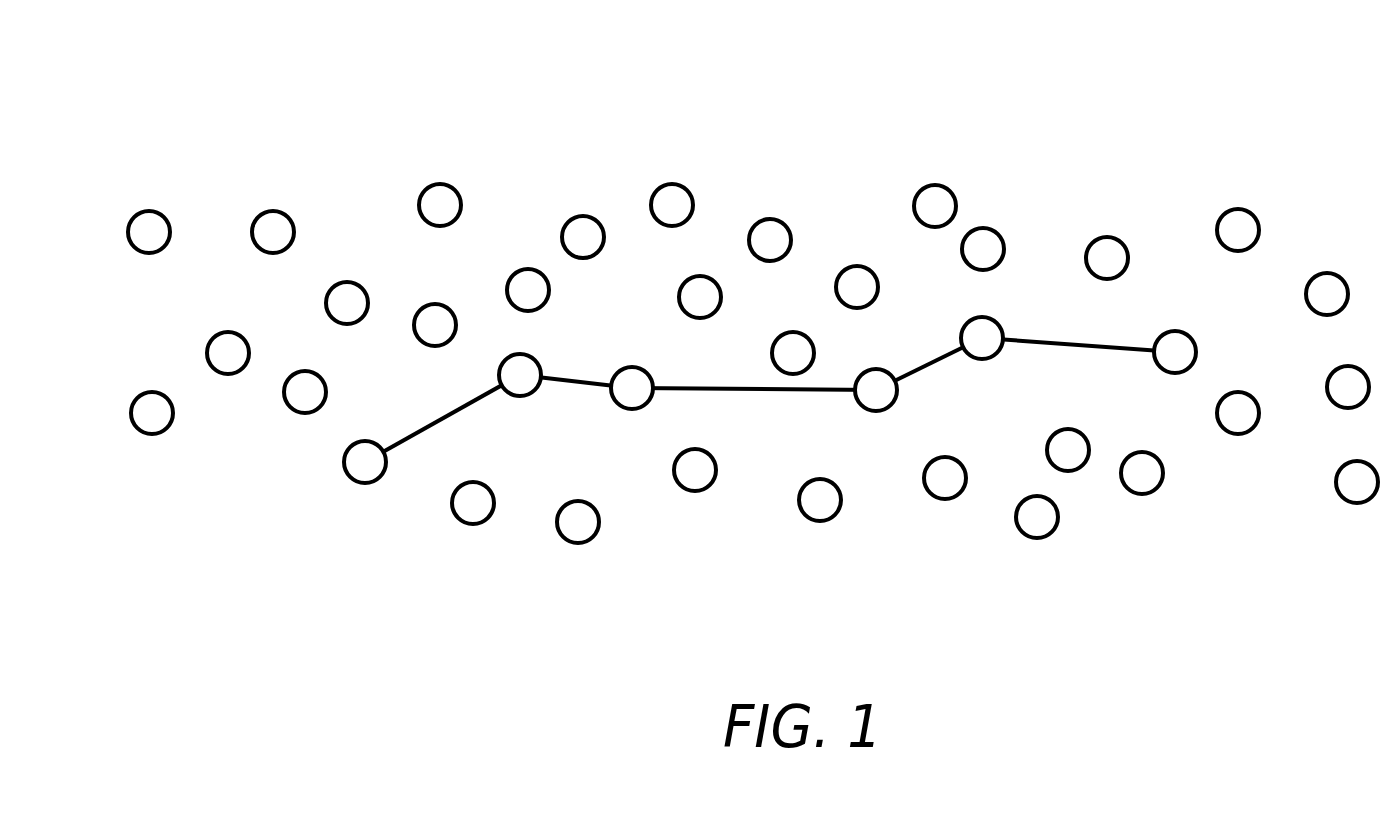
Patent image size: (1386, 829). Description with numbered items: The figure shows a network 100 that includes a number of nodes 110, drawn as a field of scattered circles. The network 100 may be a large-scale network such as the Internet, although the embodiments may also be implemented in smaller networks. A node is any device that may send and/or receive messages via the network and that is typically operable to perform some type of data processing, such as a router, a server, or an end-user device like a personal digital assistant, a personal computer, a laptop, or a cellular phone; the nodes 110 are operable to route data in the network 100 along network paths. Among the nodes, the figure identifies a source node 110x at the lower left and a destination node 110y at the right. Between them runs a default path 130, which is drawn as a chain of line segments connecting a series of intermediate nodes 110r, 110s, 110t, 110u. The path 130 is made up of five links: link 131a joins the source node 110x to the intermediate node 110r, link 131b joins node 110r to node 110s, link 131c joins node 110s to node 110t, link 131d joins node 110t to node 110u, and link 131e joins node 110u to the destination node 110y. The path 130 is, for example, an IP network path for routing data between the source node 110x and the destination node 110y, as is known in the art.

The network 100 is at (830, 45).
The nodes 110 is at (1118, 178).
The source node 110x is at (345, 467).
The intermediate node 110r is at (518, 396).
The intermediate node 110s is at (629, 409).
The intermediate node 110t is at (874, 411).
The intermediate node 110u is at (981, 359).
The destination node 110y is at (1175, 373).
The path 130 is at (720, 365).
The link 131a is at (448, 414).
The link 131b is at (575, 380).
The link 131c is at (785, 390).
The link 131d is at (927, 366).
The link 131e is at (1080, 317).